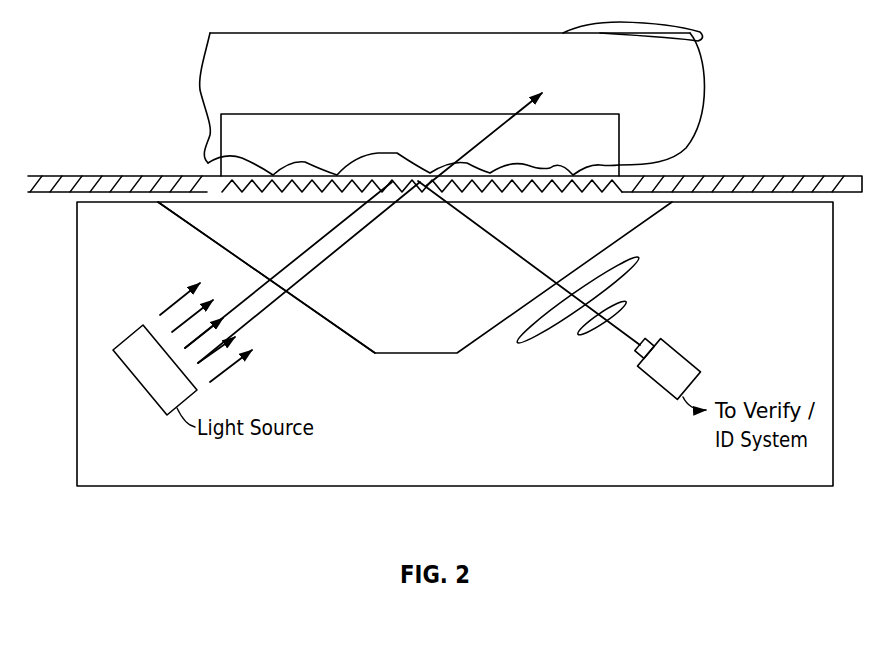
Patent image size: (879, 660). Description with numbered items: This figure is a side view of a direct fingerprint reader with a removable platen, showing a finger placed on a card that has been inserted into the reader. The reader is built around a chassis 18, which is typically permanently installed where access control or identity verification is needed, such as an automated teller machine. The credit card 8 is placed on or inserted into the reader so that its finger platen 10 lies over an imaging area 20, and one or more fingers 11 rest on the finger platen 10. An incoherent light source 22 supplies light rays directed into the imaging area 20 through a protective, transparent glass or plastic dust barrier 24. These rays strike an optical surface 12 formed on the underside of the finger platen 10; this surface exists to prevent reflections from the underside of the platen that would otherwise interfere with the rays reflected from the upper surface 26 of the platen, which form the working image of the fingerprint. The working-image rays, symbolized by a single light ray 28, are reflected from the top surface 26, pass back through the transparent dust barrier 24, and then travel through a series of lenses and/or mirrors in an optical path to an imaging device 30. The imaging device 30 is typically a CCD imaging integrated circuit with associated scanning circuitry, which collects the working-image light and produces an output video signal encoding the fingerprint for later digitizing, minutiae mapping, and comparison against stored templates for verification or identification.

The credit card 8 is at (798, 176).
The finger platen 10 is at (412, 114).
The finger 11 is at (703, 103).
The optical surface 12 is at (576, 192).
The chassis 18 is at (77, 340).
The imaging area 20 is at (443, 270).
The incoherent light source 22 is at (137, 380).
The dust barrier 24 is at (340, 328).
The upper surface of the finger platen 26 is at (240, 175).
The light ray 28 is at (578, 281).
The imaging device 30 is at (683, 352).